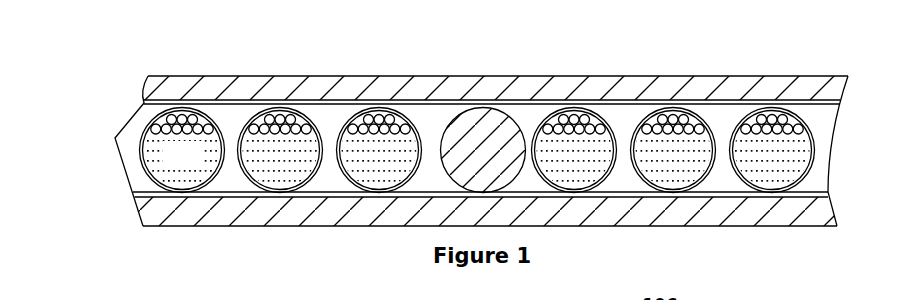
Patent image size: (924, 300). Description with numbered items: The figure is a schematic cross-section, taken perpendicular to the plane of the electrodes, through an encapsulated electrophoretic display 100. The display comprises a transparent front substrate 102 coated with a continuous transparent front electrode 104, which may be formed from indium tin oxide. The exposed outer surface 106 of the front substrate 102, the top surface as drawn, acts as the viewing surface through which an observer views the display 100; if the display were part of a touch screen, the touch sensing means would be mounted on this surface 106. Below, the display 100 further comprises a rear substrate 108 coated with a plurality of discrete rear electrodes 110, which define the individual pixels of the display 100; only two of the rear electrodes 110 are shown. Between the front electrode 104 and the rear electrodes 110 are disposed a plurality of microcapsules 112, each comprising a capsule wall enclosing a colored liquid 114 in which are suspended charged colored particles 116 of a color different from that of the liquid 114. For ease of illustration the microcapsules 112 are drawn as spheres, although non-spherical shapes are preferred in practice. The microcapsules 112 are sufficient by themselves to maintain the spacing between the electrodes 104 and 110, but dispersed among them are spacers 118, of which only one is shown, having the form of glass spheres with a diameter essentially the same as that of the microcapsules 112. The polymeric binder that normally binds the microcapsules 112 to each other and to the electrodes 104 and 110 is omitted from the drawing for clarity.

The encapsulated electrophoretic display 100 is at (846, 148).
The transparent front substrate 102 is at (687, 95).
The continuous transparent front electrode 104 is at (455, 102).
The exposed outer surface 106 is at (625, 76).
The rear substrate 108 is at (653, 212).
The discrete rear electrodes 110 is at (262, 193).
The microcapsules 112 is at (129, 138).
The colored liquid 114 is at (165, 162).
The charged colored particles 116 is at (182, 118).
The spacers 118 is at (477, 145).